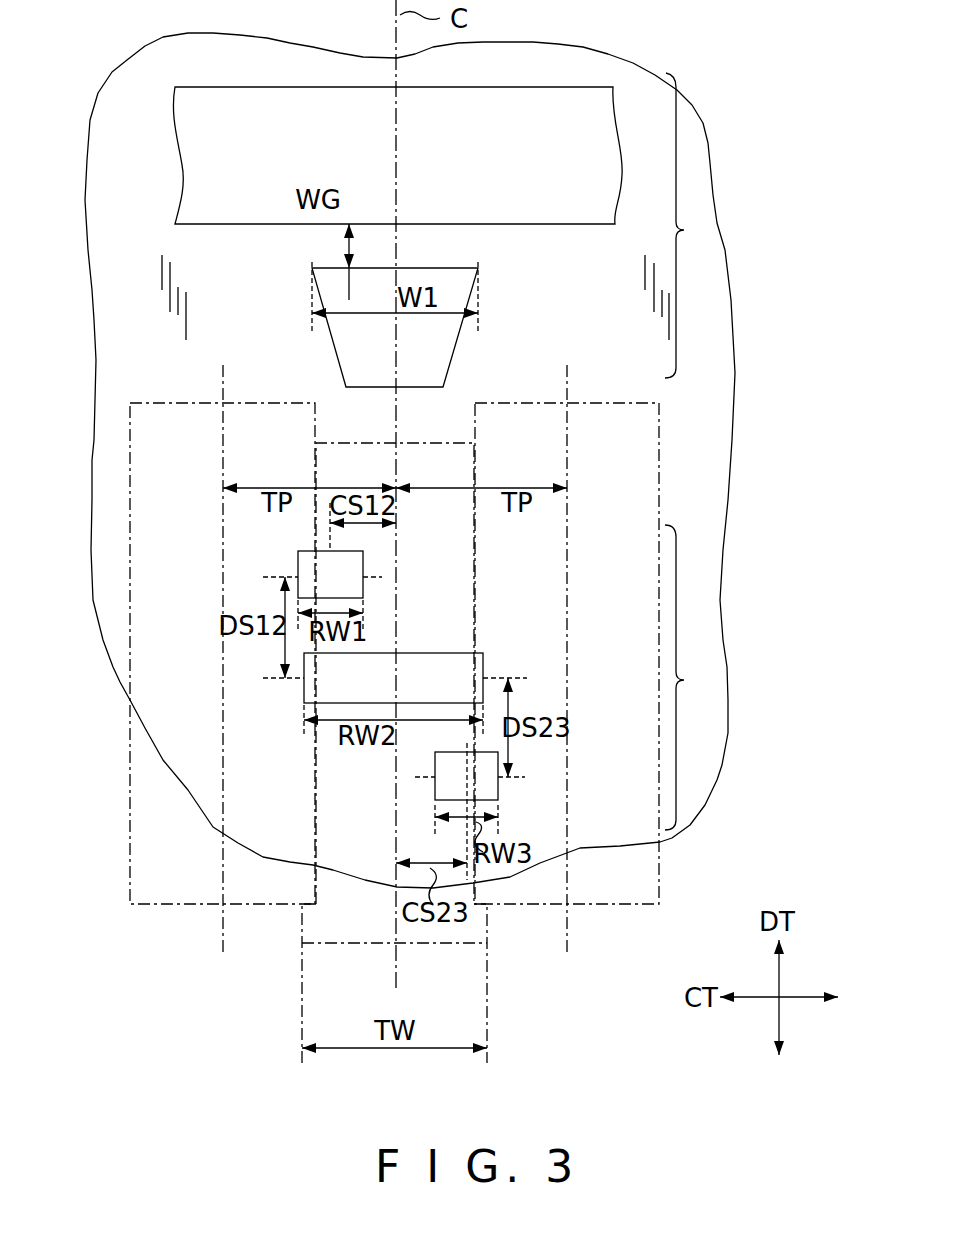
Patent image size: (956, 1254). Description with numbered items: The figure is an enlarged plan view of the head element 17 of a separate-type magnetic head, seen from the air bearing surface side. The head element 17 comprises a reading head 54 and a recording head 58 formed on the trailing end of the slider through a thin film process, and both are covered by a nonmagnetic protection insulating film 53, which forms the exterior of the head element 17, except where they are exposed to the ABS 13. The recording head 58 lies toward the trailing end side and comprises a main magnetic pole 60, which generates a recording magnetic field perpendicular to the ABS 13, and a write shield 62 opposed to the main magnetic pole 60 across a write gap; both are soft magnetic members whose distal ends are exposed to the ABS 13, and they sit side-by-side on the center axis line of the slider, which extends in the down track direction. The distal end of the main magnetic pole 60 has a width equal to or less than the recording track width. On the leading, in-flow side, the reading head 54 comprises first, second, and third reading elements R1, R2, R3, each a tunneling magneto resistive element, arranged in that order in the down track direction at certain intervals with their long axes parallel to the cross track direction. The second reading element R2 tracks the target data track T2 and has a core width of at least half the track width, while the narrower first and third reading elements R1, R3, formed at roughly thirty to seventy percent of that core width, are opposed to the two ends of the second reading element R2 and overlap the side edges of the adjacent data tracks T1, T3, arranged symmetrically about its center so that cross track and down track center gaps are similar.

The ABS 13 is at (718, 372).
The head element 17 is at (118, 356).
The protection insulating film 53 is at (105, 242).
The reading head 54 is at (693, 677).
The recording head 58 is at (693, 225).
The main magnetic pole 60 is at (445, 350).
The write shield 62 is at (598, 128).
The adjacent data track T1 is at (161, 893).
The data track T2 is at (470, 928).
The adjacent data track T3 is at (645, 886).
The first reading element R1 is at (330, 574).
The second reading element R2 is at (393, 678).
The third reading element R3 is at (466, 776).